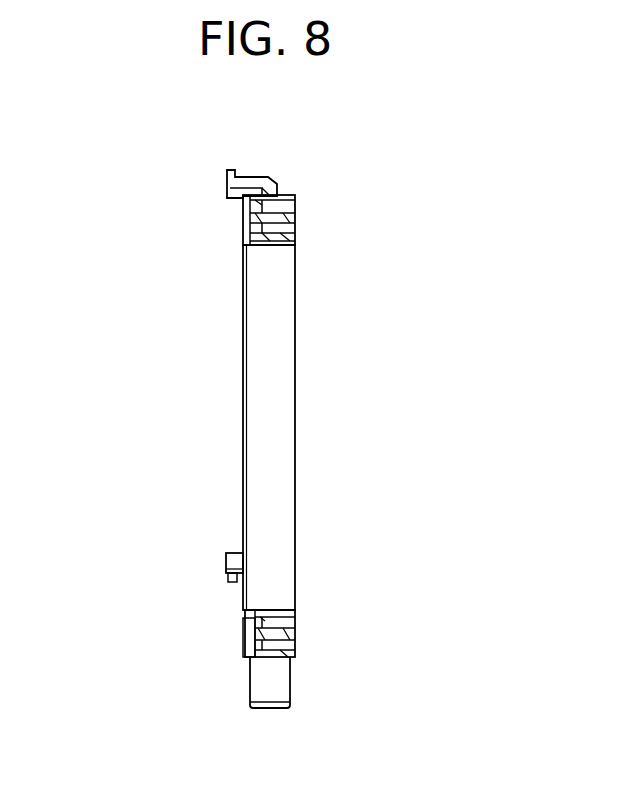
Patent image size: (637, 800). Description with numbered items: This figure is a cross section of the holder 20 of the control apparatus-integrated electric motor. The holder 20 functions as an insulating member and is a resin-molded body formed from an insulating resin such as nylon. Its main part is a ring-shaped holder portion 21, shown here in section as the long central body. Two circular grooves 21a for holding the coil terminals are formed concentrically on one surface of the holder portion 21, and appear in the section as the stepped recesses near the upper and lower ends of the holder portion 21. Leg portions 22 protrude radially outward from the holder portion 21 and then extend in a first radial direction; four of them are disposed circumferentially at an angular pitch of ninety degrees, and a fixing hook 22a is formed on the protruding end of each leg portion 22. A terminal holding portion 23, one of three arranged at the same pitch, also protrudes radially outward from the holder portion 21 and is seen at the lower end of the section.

The holder 20 is at (113, 160).
The holder portion 21 is at (298, 318).
The circular grooves 21a is at (277, 210).
The leg portions 22 is at (263, 177).
The fixing hook 22a is at (230, 170).
The terminal holding portions 23 is at (291, 681).